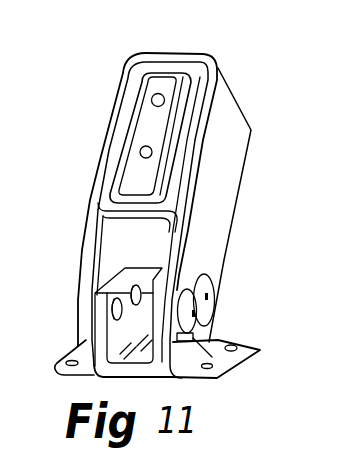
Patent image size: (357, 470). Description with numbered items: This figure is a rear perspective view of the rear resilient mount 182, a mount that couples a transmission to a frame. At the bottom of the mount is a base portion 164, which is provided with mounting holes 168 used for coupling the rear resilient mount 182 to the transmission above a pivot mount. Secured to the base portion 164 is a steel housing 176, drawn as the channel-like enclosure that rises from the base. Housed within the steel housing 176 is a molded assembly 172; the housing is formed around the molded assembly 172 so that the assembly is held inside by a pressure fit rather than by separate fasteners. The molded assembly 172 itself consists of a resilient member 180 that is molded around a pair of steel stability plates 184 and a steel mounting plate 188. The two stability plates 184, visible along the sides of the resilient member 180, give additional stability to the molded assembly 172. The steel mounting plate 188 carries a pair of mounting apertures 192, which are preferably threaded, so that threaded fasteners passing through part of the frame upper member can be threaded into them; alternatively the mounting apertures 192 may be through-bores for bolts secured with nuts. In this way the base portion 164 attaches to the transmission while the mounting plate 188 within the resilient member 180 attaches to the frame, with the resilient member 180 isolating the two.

The molded assembly 172 is at (117, 74).
The steel stability plates 184 is at (128, 128).
The bracket assembly 182 is at (76, 161).
The resilient member 180 is at (110, 174).
The mounting apertures 192 is at (151, 148).
The steel housing 176 is at (224, 180).
The steel mounting plate 188 is at (140, 178).
The base portion 164 is at (212, 343).
The mounting holes 168 is at (212, 364).